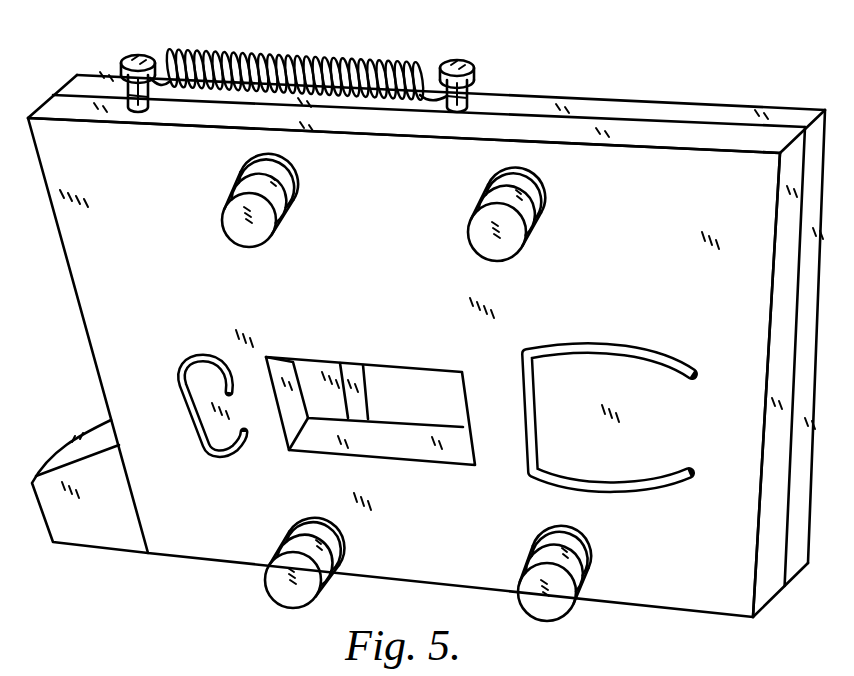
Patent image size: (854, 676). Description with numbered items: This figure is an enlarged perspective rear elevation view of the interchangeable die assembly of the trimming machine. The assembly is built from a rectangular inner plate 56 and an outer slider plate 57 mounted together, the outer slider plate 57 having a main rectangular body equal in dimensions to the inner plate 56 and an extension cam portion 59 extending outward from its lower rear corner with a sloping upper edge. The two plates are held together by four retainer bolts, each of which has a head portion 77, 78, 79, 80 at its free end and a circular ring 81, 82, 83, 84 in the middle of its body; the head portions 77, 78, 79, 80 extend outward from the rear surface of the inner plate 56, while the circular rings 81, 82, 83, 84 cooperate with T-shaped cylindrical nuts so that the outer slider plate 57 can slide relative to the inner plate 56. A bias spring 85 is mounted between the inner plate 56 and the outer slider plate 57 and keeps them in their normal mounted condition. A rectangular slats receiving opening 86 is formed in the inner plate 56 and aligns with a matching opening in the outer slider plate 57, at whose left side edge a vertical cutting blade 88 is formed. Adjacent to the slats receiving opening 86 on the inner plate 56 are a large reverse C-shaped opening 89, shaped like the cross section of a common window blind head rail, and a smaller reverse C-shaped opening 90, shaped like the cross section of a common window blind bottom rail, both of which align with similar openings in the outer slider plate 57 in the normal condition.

The inner plate 56 is at (88, 268).
The outer slider plate 57 is at (668, 104).
The extension cam portion 59 is at (90, 512).
The head portion 77 is at (223, 213).
The head portion 78 is at (497, 188).
The head portion 79 is at (268, 573).
The head portion 80 is at (585, 580).
The circular ring 81 is at (290, 173).
The circular ring 82 is at (544, 186).
The circular ring 83 is at (547, 531).
The circular ring 84 is at (312, 520).
The bias spring 85 is at (400, 70).
The slats receiving opening 86 is at (413, 373).
The vertical cutting blade 88 is at (352, 372).
The large reverse C-shaped opening 89 is at (637, 347).
The smaller reverse C-shaped opening 90 is at (186, 362).